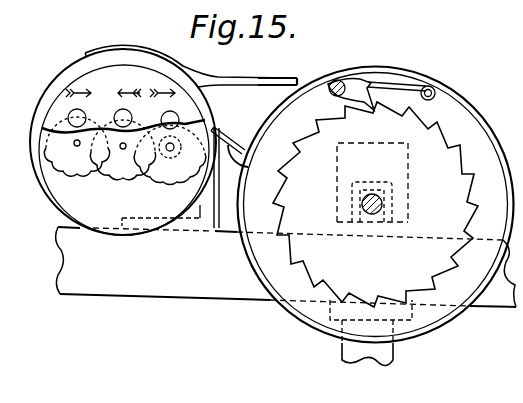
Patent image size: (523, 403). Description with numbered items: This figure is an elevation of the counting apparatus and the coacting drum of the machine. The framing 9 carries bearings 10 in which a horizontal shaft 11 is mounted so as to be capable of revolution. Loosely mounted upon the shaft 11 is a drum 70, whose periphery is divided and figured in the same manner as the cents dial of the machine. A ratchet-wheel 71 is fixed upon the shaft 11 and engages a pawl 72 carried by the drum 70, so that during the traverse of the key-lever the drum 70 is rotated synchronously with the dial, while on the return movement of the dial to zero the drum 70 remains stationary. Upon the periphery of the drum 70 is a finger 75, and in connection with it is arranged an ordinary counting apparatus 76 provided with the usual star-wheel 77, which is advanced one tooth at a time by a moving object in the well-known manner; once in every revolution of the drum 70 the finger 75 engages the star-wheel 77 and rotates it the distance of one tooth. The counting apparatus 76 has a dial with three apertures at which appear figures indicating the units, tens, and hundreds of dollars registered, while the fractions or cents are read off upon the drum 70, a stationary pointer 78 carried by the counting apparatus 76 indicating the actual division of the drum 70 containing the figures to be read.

The framing 9 is at (206, 292).
The bearings 10 is at (408, 163).
The horizontal shaft 11 is at (400, 207).
The drum 70 is at (380, 73).
The ratchet-wheel 71 is at (459, 153).
The pawl 72 is at (337, 80).
The finger 75 is at (241, 161).
The counting apparatus 76 is at (60, 196).
The star-wheel 77 is at (217, 133).
The stationary pointer 78 is at (278, 77).